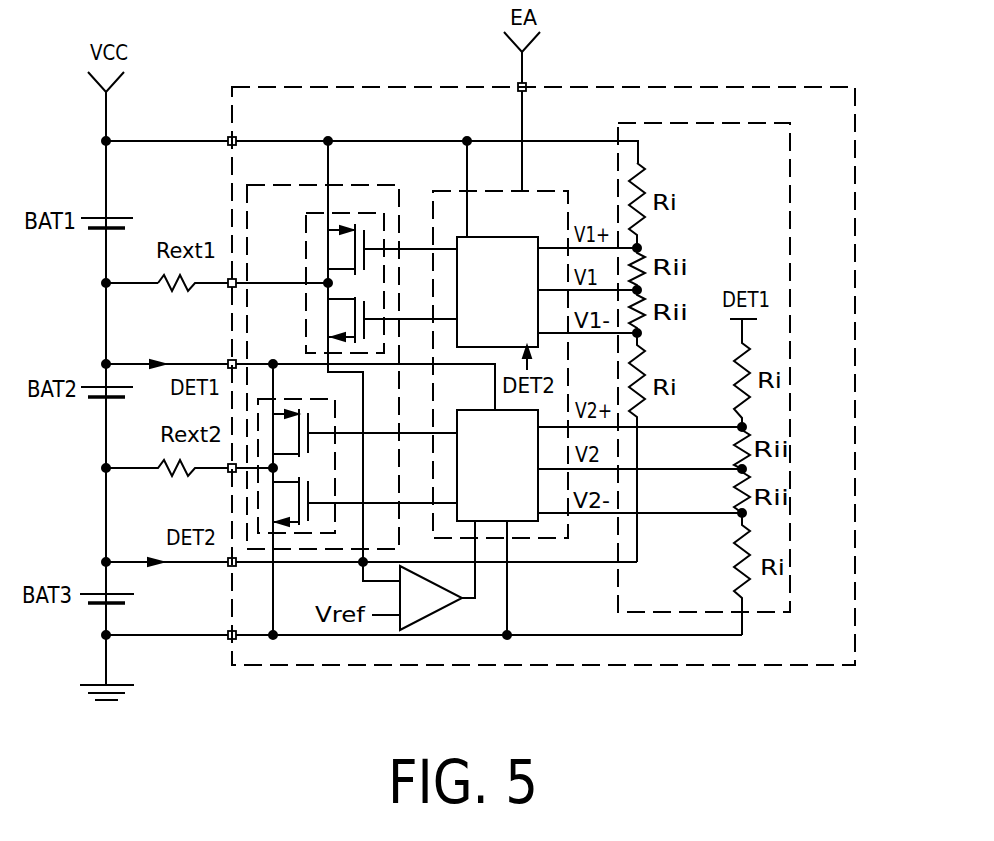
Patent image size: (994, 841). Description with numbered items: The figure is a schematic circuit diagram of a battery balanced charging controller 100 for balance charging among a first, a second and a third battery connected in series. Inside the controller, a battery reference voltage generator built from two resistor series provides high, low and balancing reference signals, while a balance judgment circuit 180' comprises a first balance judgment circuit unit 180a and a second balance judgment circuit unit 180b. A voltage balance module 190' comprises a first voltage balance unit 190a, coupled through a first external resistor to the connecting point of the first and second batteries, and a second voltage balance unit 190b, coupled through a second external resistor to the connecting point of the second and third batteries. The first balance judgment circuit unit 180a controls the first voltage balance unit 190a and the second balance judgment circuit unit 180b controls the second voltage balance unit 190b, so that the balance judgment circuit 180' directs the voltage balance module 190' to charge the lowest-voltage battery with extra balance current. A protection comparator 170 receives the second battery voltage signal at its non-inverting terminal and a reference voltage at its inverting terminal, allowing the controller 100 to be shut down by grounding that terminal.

The battery balanced charging controller 100 is at (762, 88).
The protection comparator 170 is at (442, 603).
The balance judgment circuit 180' is at (494, 347).
The first balance judgment circuit unit 180a is at (521, 301).
The second balance judgment circuit unit 180b is at (521, 474).
The voltage balance module 190' is at (328, 348).
The first voltage balance unit 190a is at (309, 233).
The second voltage balance unit 190b is at (317, 401).